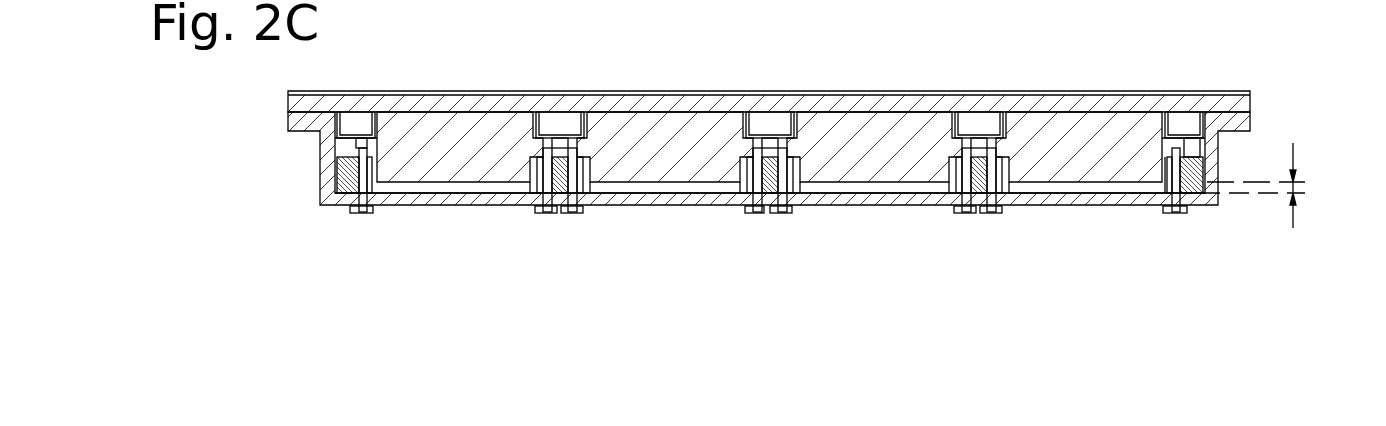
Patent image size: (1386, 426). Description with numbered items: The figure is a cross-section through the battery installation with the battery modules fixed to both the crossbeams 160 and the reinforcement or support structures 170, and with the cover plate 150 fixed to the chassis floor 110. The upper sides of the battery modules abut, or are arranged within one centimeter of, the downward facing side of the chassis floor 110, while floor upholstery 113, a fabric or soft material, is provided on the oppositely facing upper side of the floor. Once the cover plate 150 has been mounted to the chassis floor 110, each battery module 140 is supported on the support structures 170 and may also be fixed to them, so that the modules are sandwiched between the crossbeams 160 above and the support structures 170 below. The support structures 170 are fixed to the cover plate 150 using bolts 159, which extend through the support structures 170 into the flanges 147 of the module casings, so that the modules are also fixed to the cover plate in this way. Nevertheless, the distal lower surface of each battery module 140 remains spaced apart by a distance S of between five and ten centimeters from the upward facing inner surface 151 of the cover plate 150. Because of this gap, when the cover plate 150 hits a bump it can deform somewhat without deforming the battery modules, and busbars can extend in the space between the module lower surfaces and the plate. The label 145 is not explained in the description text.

The chassis floor 110 is at (291, 105).
The floor upholstery 113 is at (378, 95).
The plate layer 145 is at (769, 56).
The battery module 140 is at (457, 133).
The flange 147 is at (571, 137).
The cover plate 150 is at (327, 167).
The upward facing inner surface 151 is at (446, 188).
The bolt 159 is at (975, 212).
The crossbeam 160 is at (1182, 120).
The support structure 170 is at (770, 177).
The distance S is at (1293, 150).